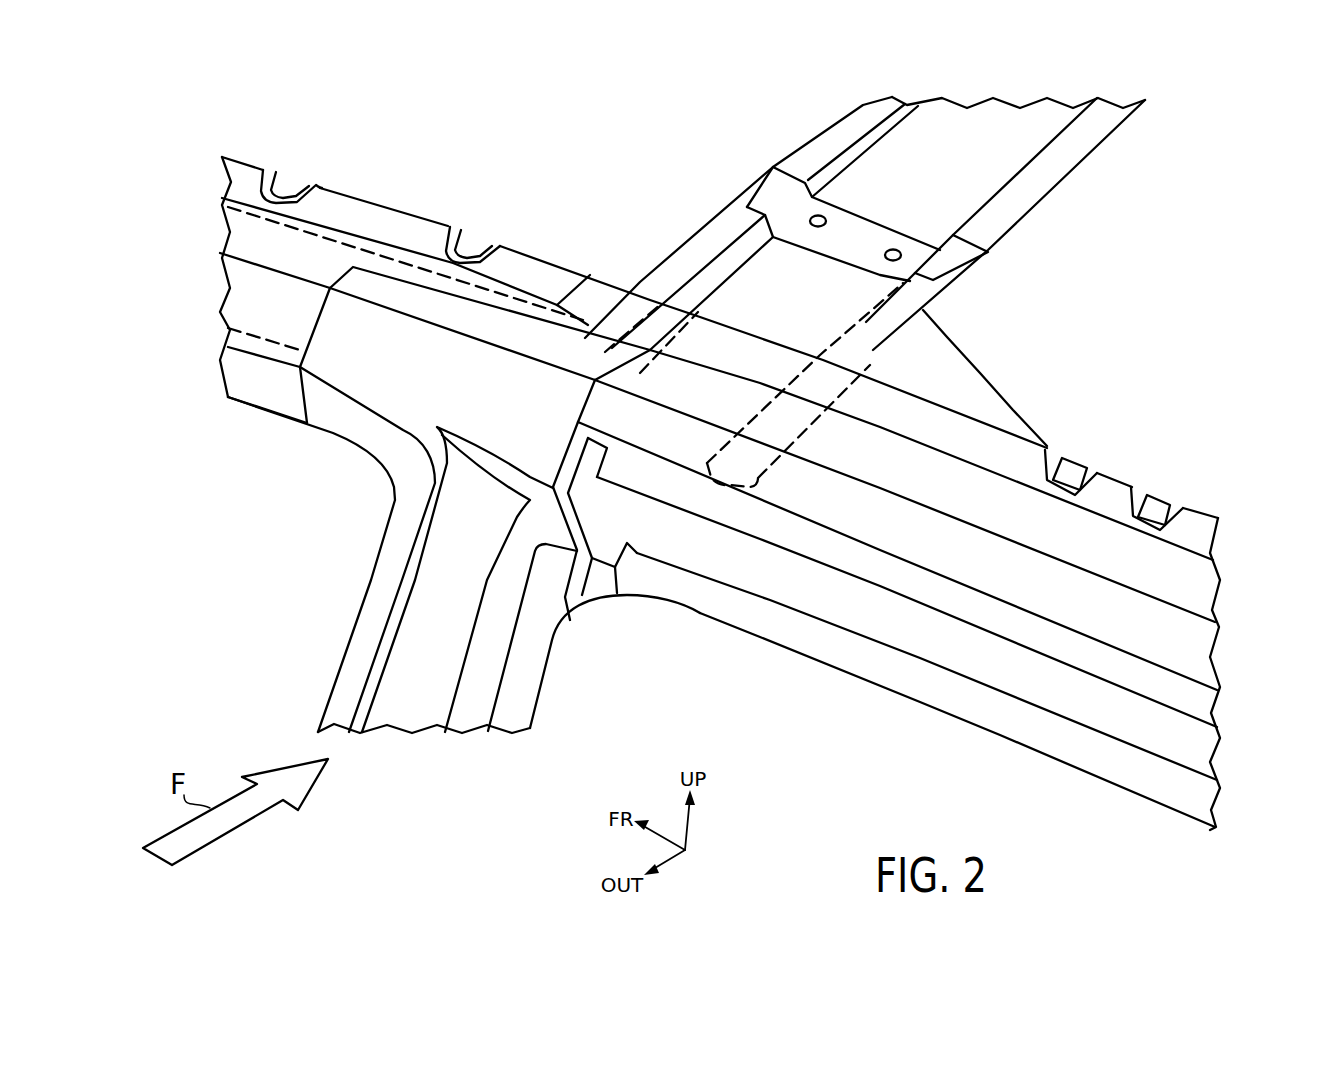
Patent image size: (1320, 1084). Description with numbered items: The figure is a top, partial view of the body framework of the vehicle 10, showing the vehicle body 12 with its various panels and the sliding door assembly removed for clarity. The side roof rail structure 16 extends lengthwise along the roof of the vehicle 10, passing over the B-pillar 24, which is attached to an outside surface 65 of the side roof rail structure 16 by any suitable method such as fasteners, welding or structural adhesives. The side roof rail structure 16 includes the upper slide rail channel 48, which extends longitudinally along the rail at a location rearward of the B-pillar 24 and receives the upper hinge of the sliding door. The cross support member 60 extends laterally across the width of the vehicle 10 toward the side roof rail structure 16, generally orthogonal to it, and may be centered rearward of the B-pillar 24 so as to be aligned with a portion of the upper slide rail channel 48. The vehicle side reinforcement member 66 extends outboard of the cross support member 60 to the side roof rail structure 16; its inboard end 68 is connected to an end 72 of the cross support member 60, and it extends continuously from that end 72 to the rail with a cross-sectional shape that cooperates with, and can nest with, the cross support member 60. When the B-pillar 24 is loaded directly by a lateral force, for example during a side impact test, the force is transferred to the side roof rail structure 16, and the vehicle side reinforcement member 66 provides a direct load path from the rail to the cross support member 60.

The vehicle 10 is at (236, 571).
The vehicle body 12 is at (1108, 345).
The side roof rail structure 16 is at (1185, 474).
The B-pillar 24 is at (488, 682).
The upper slide rail channel 48 is at (1005, 678).
The cross support member 60 is at (1065, 158).
The outside surface 65 is at (502, 304).
The vehicle side reinforcement member 66 is at (870, 346).
The inboard end 68 is at (958, 282).
The end 72 is at (851, 208).